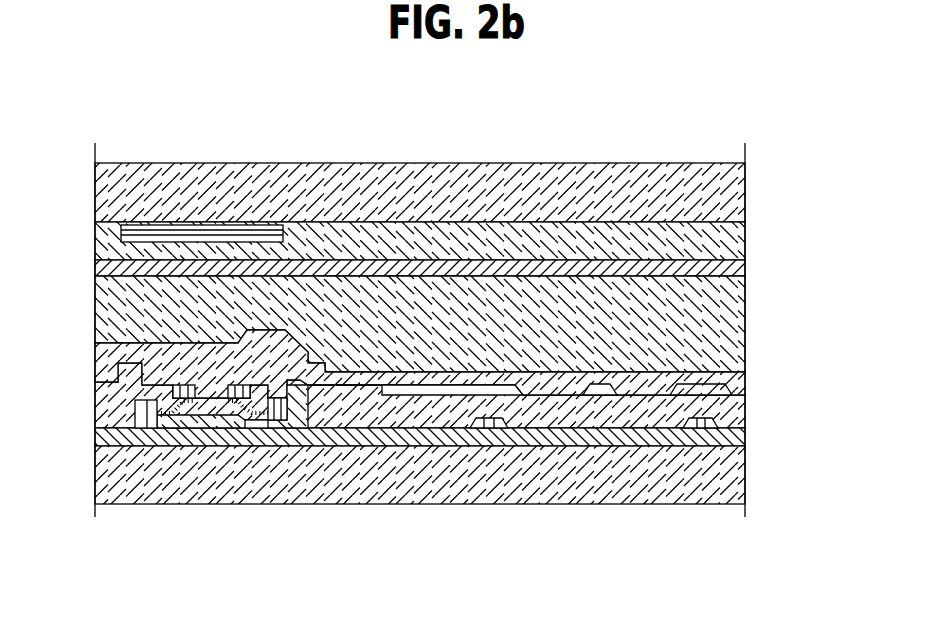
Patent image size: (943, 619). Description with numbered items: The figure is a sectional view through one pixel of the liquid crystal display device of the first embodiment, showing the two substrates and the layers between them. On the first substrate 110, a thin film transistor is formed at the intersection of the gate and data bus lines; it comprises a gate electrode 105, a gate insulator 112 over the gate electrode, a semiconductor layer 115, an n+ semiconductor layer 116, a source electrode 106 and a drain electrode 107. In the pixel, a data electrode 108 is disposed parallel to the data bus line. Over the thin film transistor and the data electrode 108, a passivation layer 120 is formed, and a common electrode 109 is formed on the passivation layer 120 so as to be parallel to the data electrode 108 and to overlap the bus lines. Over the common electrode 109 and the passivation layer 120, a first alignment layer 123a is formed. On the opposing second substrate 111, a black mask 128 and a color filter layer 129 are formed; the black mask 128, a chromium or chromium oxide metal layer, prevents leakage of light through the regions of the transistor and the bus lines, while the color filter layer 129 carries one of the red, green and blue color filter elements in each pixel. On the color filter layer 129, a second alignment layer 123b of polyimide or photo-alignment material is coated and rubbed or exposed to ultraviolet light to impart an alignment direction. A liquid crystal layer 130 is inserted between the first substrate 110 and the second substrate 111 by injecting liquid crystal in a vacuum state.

The gate electrode 105 is at (213, 440).
The source electrode 106 is at (172, 392).
The drain electrode 107 is at (297, 432).
The data electrode 108 is at (491, 430).
The common electrode 109 is at (363, 392).
The first substrate 110 is at (656, 494).
The second substrate 111 is at (608, 195).
The gate insulator 112 is at (746, 443).
The semiconductor layer 115 is at (165, 430).
The n+ semiconductor layer 116 is at (267, 430).
The passivation layer 120 is at (746, 407).
The first alignment layer 123a is at (745, 360).
The second alignment layer 123b is at (745, 268).
The black mask 128 is at (188, 233).
The color filter layer 129 is at (745, 238).
The liquid crystal layer 130 is at (110, 318).